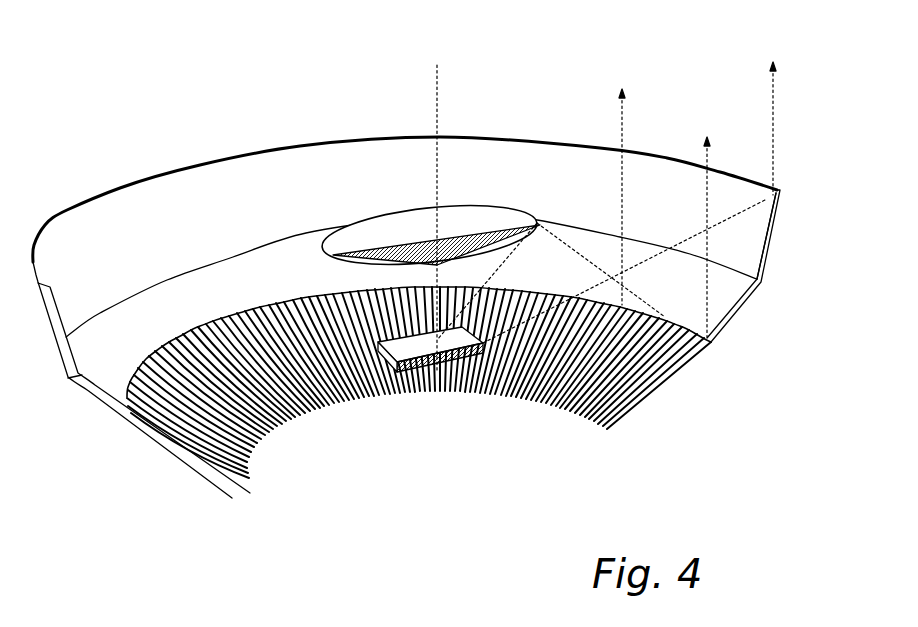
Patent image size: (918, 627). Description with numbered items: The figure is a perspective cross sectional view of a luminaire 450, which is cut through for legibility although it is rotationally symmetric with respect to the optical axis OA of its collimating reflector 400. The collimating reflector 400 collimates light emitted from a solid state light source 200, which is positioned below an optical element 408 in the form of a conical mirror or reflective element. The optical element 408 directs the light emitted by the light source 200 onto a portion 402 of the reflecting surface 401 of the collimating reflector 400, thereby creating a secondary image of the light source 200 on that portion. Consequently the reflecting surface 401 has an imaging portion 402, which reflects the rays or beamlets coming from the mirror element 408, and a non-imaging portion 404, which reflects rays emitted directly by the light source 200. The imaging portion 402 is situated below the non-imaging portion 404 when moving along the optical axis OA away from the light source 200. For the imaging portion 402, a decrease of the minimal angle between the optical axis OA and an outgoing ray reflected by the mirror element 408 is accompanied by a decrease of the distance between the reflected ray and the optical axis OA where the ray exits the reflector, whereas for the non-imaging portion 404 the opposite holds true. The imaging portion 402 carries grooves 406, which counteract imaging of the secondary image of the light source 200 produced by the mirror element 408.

The collimating reflector 400 is at (560, 118).
The reflecting surface 401 is at (223, 198).
The imaging portion 402 is at (282, 398).
The non-imaging portion 404 is at (673, 188).
The grooves 406 is at (500, 378).
The optical element 408 is at (370, 238).
The light source 200 is at (397, 373).
The luminaire 450 is at (473, 97).
The optical axis OA is at (433, 206).